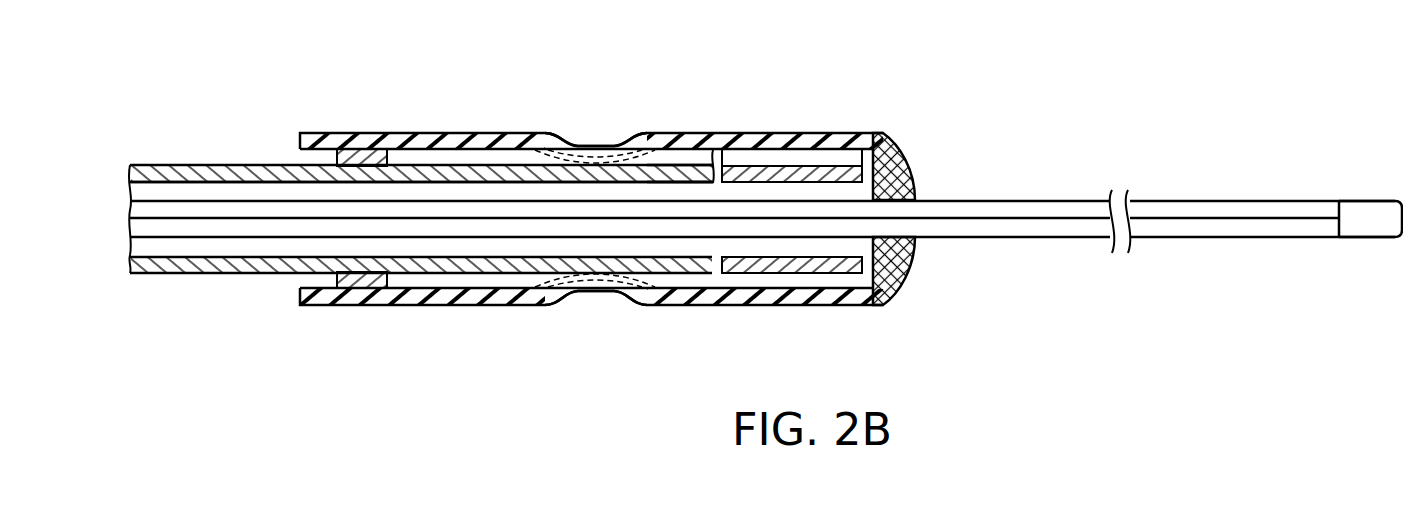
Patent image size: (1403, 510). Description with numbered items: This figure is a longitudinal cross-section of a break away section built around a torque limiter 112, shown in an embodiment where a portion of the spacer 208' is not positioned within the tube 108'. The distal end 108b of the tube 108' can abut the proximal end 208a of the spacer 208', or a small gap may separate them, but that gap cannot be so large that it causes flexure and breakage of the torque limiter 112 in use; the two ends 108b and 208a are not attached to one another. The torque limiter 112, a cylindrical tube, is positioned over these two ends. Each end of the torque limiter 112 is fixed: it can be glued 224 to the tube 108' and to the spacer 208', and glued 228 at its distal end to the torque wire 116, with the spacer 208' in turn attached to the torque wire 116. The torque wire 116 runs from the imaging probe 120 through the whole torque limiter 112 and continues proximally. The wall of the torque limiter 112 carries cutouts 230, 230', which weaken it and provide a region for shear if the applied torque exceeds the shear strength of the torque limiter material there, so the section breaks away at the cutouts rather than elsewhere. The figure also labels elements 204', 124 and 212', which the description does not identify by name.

The tube 108' is at (421, 191).
The lumen of outer tubular member 204' is at (421, 148).
The torque wire 116 is at (220, 238).
The inner lumen 124 is at (160, 222).
The imaging probe 120 is at (1363, 202).
The torque limiter 112 is at (437, 133).
The cutout 230 is at (595, 121).
The cutout 230' is at (595, 318).
The glue 224 is at (350, 155).
The distal end of the tube 108b is at (683, 135).
The spacer 208' is at (809, 176).
The proximal end of the spacer 208a is at (723, 148).
The gap 212' is at (792, 135).
The glue 228 is at (898, 150).